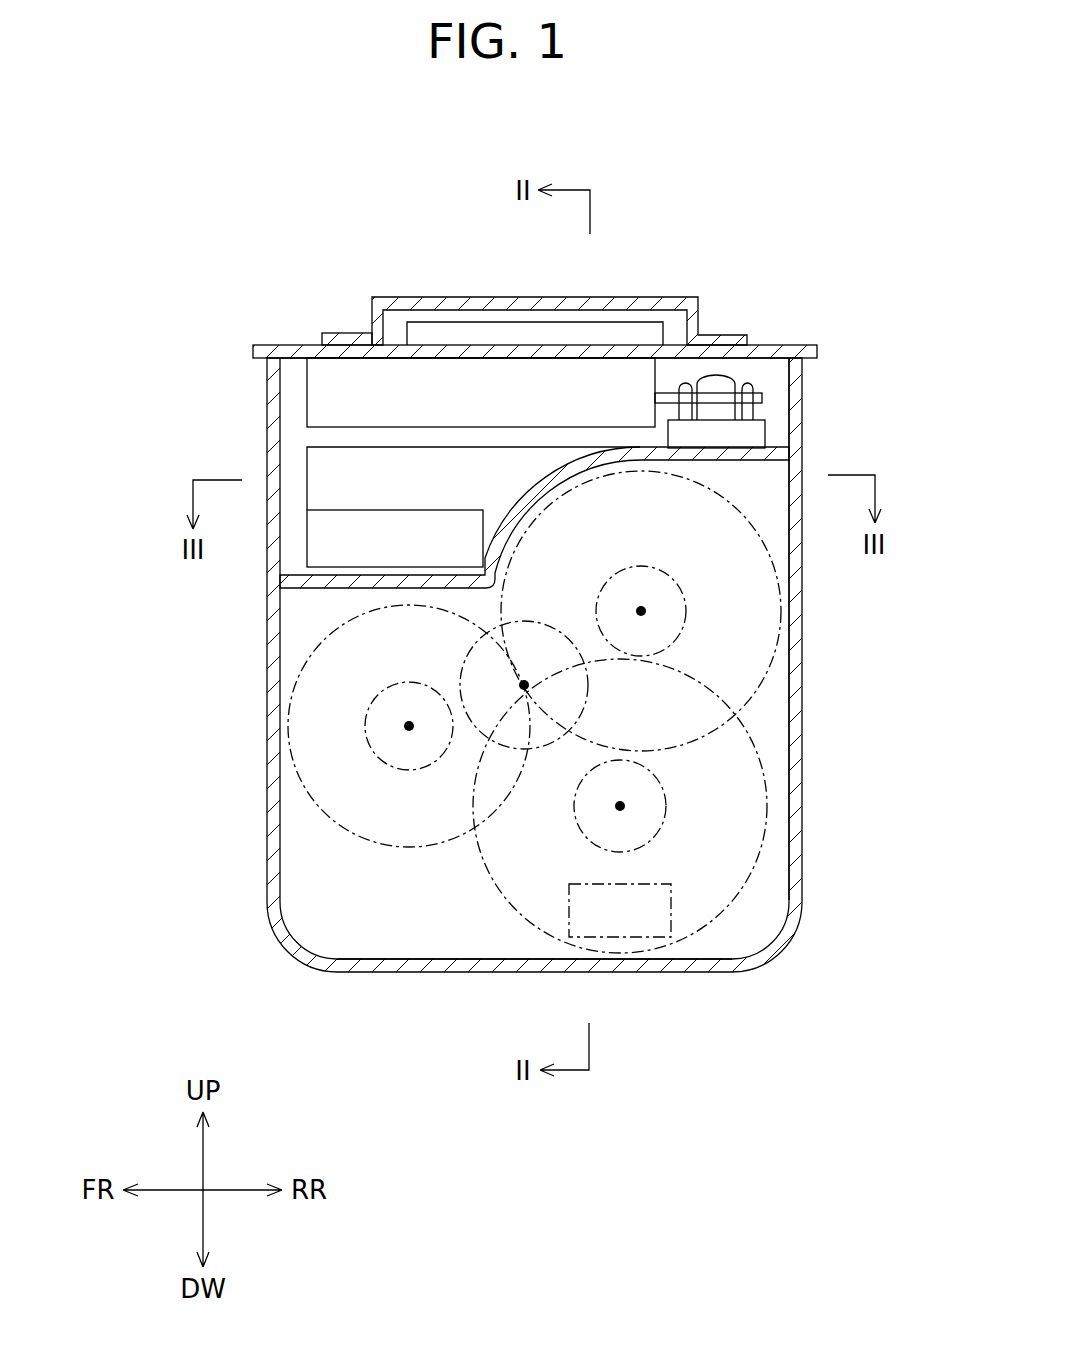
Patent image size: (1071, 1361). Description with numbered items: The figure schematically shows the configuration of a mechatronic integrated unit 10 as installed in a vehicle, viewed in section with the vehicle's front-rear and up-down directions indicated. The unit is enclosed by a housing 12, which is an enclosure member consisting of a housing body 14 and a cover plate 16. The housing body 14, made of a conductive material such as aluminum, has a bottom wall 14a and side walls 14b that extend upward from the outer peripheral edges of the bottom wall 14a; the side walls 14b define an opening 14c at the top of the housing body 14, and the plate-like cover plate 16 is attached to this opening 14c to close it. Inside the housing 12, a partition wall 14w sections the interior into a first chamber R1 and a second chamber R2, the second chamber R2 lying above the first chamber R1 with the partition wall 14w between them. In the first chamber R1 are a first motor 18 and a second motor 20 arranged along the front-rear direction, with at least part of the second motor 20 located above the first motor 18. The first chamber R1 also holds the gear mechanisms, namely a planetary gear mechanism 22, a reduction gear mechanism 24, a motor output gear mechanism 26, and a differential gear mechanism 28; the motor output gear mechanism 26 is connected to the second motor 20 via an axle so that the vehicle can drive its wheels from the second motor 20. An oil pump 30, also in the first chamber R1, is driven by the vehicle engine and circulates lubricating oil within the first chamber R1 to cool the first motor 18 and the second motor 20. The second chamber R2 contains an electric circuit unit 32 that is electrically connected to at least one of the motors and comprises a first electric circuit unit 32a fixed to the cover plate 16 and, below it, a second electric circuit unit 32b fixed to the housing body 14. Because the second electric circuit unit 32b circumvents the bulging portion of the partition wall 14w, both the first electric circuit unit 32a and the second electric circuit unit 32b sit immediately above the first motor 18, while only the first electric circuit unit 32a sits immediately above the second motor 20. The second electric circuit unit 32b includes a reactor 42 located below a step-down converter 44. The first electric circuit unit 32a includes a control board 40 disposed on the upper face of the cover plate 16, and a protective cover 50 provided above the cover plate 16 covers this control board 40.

The mechatronic integrated unit 10 is at (840, 178).
The housing 12 is at (873, 319).
The housing body 14 is at (800, 776).
The bottom wall 14a is at (415, 972).
The side walls 14b is at (800, 716).
The opening 14c is at (788, 392).
The partition wall 14w is at (775, 468).
The cover plate 16 is at (296, 345).
The first motor 18 is at (322, 818).
The second motor 20 is at (769, 668).
The planetary gear mechanism 22 is at (368, 753).
The reduction gear mechanism 24 is at (464, 657).
The motor output gear mechanism 26 is at (686, 606).
The differential gear mechanism 28 is at (727, 910).
The oil pump 30 is at (630, 937).
The electric circuit unit 32 is at (86, 414).
The first electric circuit unit 32a is at (296, 397).
The second electric circuit unit 32b is at (296, 532).
The control board 40 is at (618, 320).
The reactor 42 is at (382, 550).
The step-down converter 44 is at (360, 497).
The protective cover 50 is at (658, 297).
The first chamber R1 is at (779, 897).
The second chamber R2 is at (787, 417).